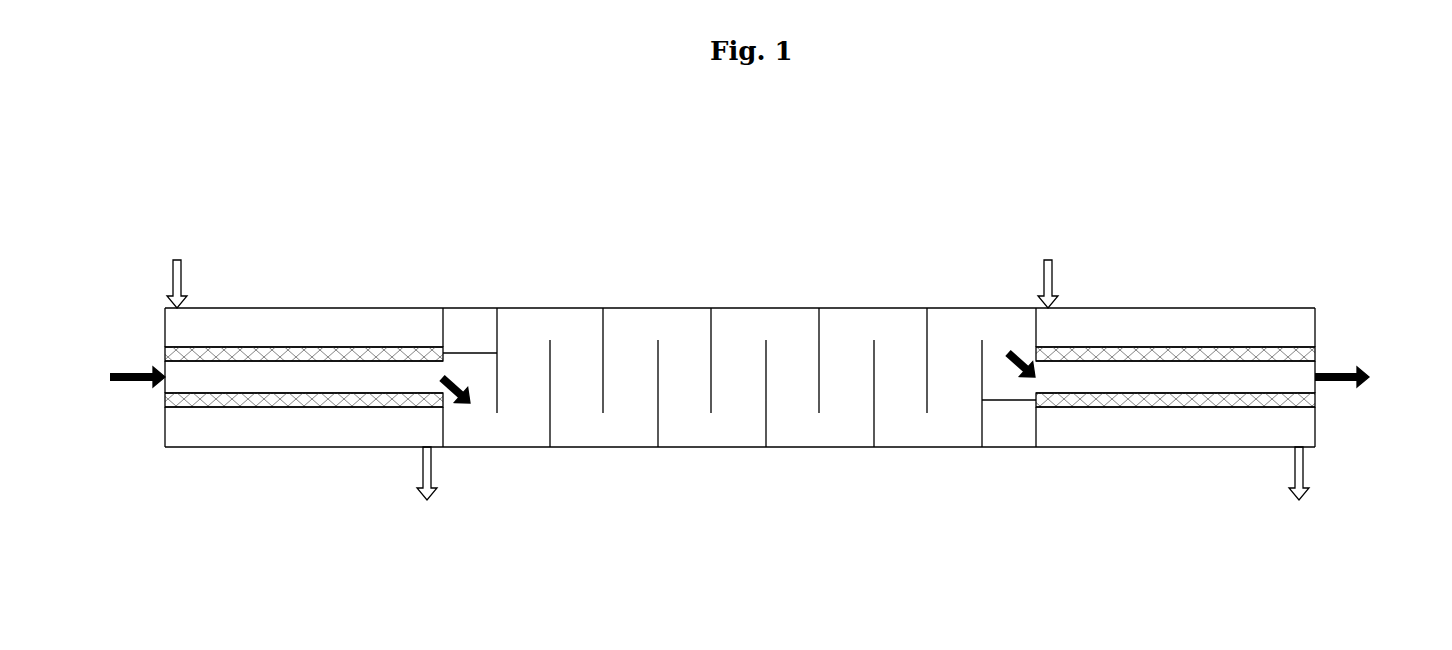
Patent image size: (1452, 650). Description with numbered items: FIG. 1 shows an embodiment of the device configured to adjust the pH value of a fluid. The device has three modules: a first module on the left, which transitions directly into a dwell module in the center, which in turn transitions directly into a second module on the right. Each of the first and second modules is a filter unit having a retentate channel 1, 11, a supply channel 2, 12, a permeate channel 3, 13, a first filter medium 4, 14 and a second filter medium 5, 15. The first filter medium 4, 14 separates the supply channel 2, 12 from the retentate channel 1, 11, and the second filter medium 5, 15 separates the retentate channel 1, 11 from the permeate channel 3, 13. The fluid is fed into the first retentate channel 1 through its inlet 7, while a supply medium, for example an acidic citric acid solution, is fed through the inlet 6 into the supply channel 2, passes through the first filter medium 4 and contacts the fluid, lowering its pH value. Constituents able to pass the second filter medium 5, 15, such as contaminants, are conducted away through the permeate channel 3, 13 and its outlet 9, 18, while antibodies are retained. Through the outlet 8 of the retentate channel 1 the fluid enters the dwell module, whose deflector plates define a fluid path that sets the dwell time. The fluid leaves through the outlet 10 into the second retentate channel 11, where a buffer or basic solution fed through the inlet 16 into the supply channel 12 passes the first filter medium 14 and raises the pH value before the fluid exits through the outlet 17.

The retentate channel 1 is at (303, 377).
The supply channel 2 is at (303, 332).
The permeate channel 3 is at (303, 423).
The first filter medium 4 is at (410, 355).
The second filter medium 5 is at (357, 400).
The inlet of the supply channel 6 is at (177, 271).
The inlet of the retentate channel 7 is at (125, 378).
The outlet of the retentate channel 8 is at (456, 383).
The outlet of the permeate channel 9 is at (422, 484).
The outlet of the dwell module 10 is at (1013, 371).
The retentate channel 11 is at (1177, 377).
The supply channel 12 is at (1175, 332).
The permeate channel 13 is at (1175, 423).
The first filter medium 14 is at (1283, 355).
The second filter medium 15 is at (1230, 400).
The inlet of the supply channel 16 is at (1049, 271).
The outlet of the retentate channel 17 is at (1357, 378).
The outlet of the permeate channel 18 is at (1292, 484).